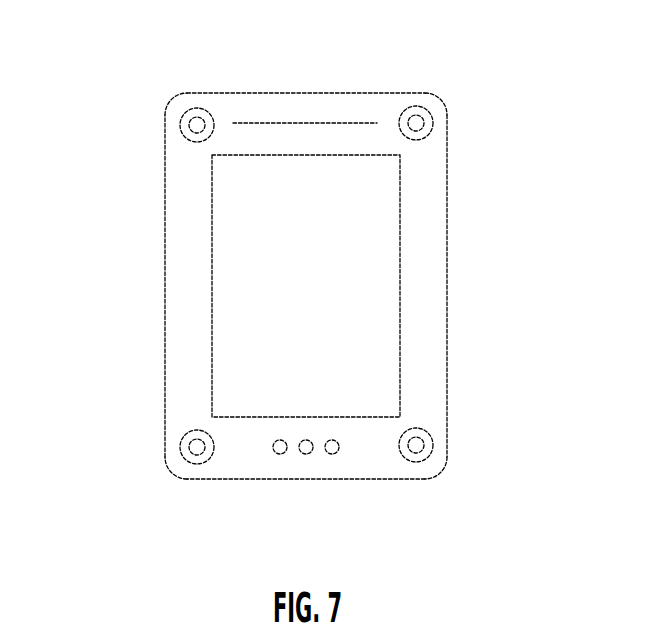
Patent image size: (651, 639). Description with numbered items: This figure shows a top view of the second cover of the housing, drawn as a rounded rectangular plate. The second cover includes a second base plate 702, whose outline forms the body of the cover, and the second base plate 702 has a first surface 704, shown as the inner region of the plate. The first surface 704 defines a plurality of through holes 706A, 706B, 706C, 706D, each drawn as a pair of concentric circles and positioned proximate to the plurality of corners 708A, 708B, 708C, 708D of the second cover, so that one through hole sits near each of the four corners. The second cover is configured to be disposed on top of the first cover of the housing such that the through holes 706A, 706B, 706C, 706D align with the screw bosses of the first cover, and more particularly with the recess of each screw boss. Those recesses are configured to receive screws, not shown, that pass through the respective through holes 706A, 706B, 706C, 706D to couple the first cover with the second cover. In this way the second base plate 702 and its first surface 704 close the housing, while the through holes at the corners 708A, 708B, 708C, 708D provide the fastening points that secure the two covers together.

The second base plate 702 is at (165, 238).
The first surface 704 is at (422, 268).
The through hole 706A is at (197, 125).
The through hole 706B is at (416, 123).
The through hole 706C is at (416, 444).
The through hole 706D is at (197, 447).
The corner 708A is at (168, 96).
The corner 708B is at (441, 102).
The corner 708C is at (443, 472).
The corner 708D is at (166, 475).